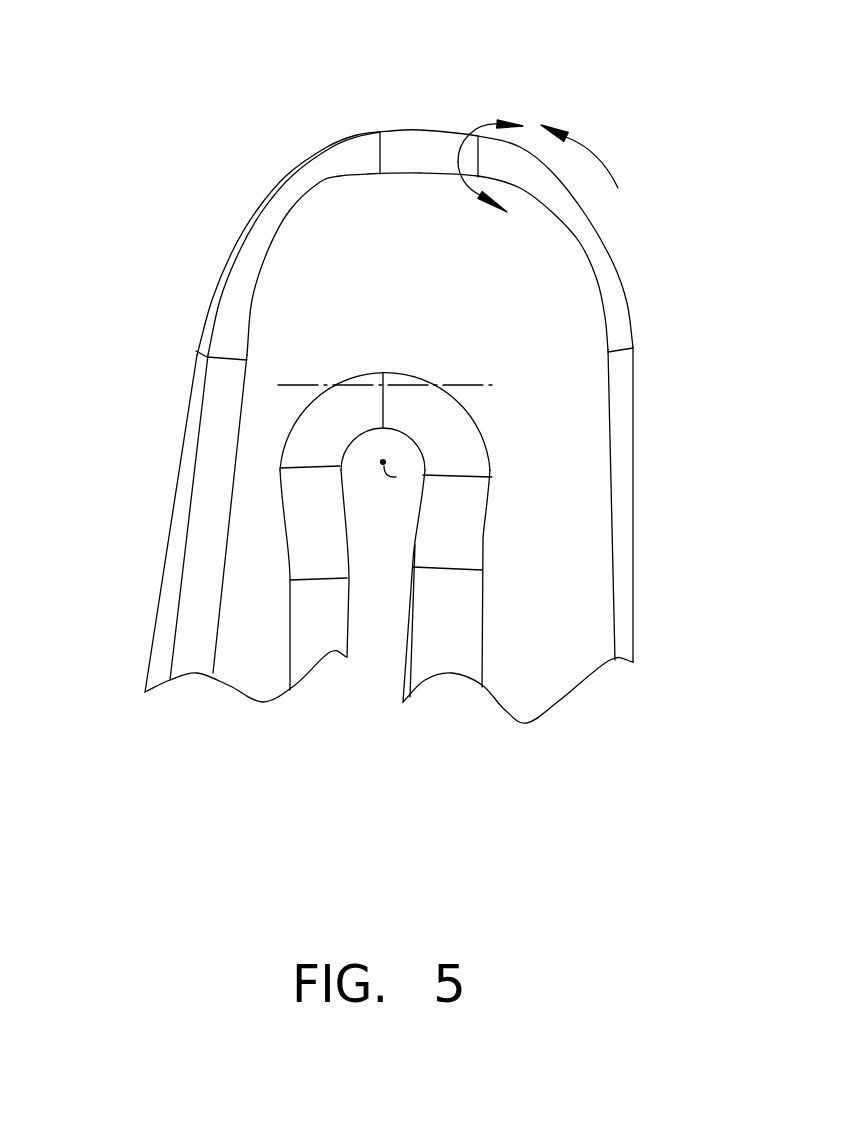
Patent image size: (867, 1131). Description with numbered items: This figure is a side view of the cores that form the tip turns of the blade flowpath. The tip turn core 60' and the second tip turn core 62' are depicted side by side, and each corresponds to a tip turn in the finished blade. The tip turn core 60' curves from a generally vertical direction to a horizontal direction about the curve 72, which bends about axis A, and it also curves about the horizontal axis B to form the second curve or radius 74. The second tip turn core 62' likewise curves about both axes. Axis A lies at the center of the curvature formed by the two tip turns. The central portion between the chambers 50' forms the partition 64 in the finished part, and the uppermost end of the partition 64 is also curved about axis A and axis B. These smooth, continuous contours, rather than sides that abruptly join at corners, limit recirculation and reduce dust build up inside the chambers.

The tip turn core 60' is at (400, 393).
The second tip turn core 62' is at (400, 405).
The curve 72 is at (597, 158).
The second curve or radius 74 is at (457, 155).
The chambers 50' is at (400, 535).
The partition 64 is at (369, 668).